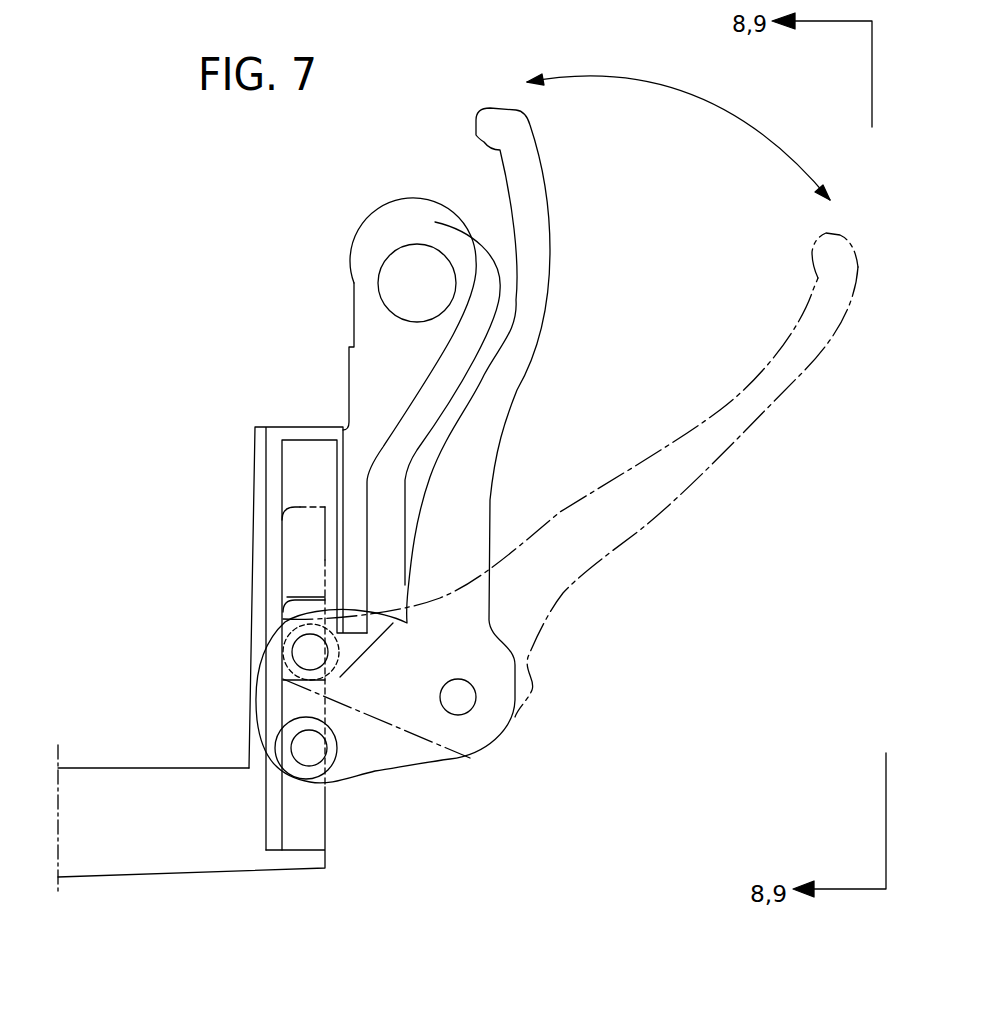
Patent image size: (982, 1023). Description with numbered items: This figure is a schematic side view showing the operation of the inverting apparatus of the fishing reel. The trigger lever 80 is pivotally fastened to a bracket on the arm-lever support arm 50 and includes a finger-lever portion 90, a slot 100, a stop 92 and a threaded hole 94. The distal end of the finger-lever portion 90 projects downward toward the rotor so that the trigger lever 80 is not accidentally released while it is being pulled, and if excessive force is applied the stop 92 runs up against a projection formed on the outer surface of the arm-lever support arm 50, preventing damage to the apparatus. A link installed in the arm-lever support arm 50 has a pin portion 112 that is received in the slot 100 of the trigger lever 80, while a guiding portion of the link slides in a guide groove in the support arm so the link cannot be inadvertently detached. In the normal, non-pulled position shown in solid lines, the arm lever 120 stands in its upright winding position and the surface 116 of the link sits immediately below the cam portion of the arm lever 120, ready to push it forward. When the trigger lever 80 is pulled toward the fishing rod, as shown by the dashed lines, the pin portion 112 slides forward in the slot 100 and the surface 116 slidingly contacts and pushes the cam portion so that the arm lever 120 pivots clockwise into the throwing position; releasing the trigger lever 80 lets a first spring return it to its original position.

The arm-lever support arm 50 is at (280, 427).
The trigger lever 80 is at (537, 348).
The finger-lever portion 90 is at (550, 220).
The stop 92 is at (355, 763).
The threaded hole 94 is at (466, 692).
The slot 100 is at (340, 736).
The pin portion 112 is at (310, 750).
The surface 116 is at (295, 597).
The arm lever 120 is at (377, 237).